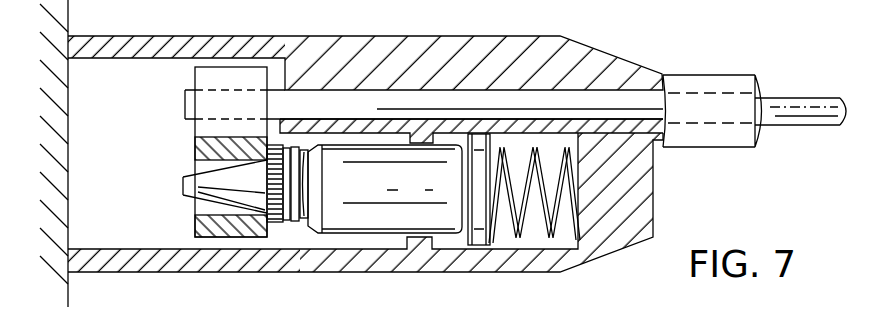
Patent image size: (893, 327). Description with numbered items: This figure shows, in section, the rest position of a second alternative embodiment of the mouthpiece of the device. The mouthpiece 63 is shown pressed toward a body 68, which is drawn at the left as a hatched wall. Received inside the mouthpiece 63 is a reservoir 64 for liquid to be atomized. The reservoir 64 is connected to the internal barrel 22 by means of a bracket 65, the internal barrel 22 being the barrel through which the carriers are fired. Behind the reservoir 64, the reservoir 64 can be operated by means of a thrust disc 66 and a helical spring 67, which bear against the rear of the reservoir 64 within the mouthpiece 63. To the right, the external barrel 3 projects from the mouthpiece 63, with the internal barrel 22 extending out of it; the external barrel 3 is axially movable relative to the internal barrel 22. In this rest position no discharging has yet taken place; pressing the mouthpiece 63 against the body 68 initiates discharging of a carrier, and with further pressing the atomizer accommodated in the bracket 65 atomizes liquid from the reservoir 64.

The body 68 is at (52, 108).
The mouthpiece 63 is at (636, 205).
The bracket 65 is at (222, 152).
The reservoir 64 is at (370, 192).
The thrust disc 66 is at (497, 246).
The helical spring 67 is at (562, 237).
The external barrel 3 is at (718, 141).
The internal barrel 22 is at (819, 122).